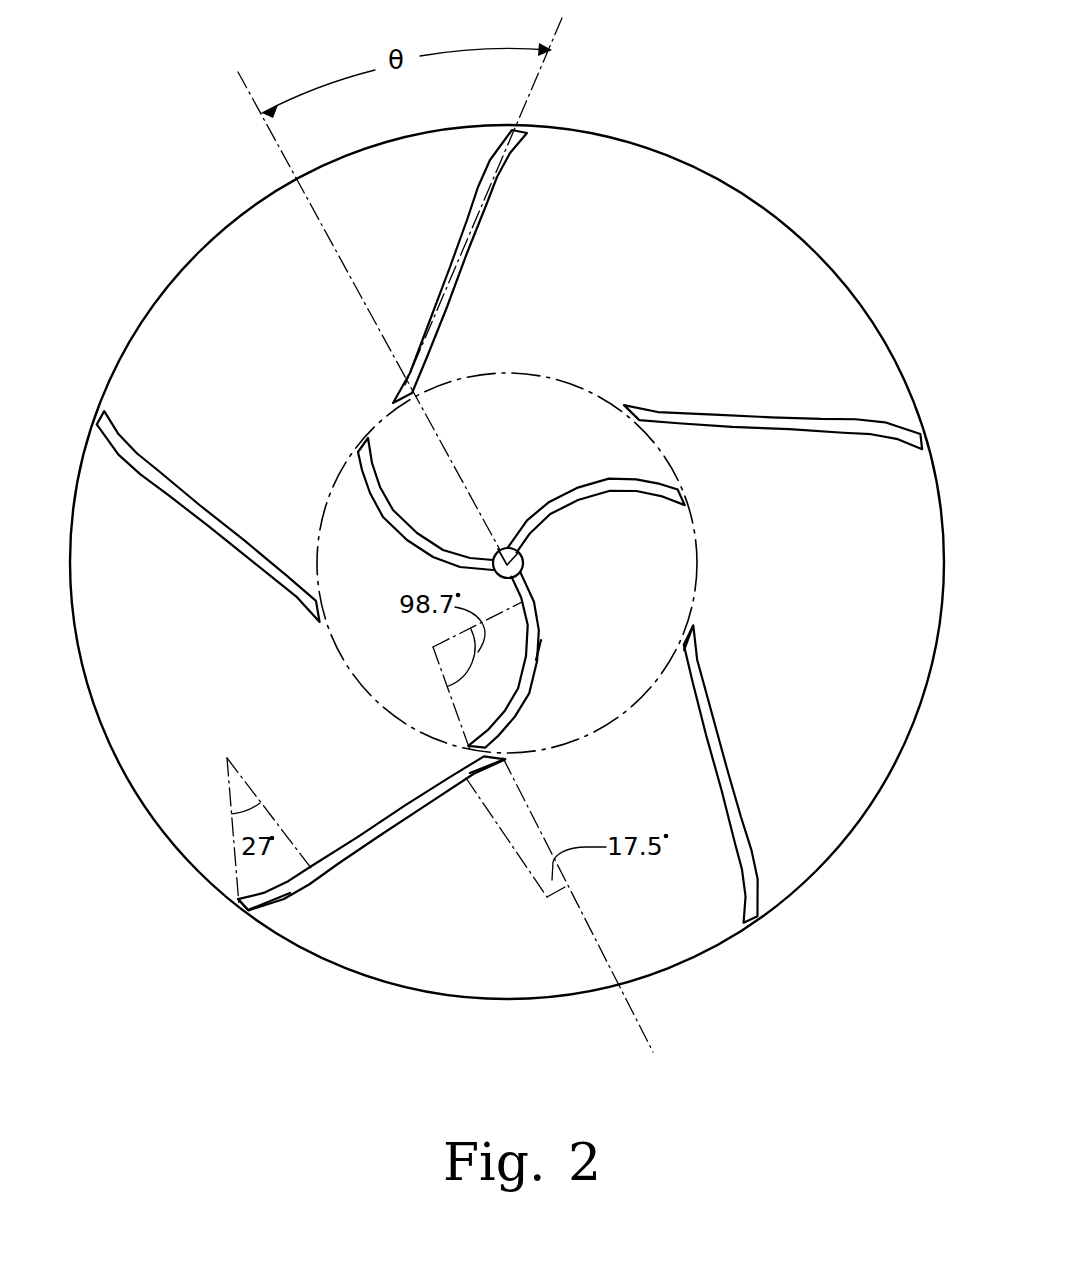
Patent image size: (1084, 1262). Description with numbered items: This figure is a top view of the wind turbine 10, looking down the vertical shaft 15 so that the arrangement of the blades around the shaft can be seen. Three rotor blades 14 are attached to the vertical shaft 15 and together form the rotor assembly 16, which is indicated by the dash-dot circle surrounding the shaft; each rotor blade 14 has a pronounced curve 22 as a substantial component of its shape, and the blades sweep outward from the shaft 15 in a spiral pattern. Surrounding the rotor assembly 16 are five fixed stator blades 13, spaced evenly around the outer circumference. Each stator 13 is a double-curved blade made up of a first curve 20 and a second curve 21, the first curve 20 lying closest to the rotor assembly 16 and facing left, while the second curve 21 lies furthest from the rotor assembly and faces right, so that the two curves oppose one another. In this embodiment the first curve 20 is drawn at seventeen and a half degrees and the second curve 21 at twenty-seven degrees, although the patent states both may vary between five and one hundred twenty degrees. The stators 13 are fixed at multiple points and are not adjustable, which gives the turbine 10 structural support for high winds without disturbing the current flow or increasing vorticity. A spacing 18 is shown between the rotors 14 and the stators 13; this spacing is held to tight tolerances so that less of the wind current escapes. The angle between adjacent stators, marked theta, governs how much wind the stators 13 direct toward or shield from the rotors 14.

The wind turbine 10 is at (800, 976).
The stator blade 13 is at (463, 235).
The rotor blade 14 is at (422, 538).
The vertical shaft 15 is at (520, 556).
The rotor assembly 16 is at (576, 337).
The spacing 18 is at (684, 652).
The first curve 20 is at (455, 760).
The second curve 21 is at (304, 912).
The curve 22 is at (556, 649).